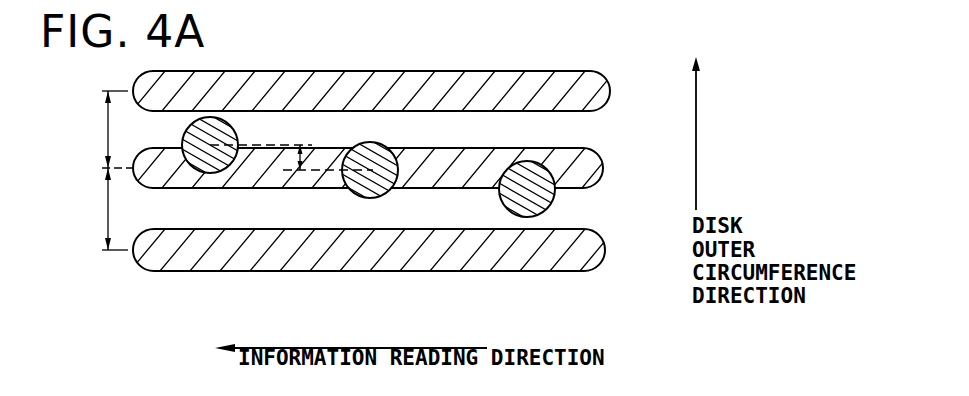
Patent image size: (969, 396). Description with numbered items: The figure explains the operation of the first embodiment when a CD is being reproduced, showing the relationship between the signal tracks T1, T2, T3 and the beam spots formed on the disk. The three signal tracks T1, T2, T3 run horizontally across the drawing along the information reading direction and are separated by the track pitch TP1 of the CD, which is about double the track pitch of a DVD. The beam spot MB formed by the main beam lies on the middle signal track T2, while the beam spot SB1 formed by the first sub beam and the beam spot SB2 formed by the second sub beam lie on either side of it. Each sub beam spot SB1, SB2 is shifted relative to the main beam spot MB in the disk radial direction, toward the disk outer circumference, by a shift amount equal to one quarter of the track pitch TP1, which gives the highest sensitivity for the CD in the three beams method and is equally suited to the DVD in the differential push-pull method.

The signal track T1 is at (605, 250).
The signal track T2 is at (603, 169).
The signal track T3 is at (610, 91).
The beam spot of first sub beam SB1 is at (207, 173).
The beam spot of second sub beam SB2 is at (528, 215).
The beam spot of main beam MB is at (383, 184).
The track pitch of CD TP1 is at (99, 170).